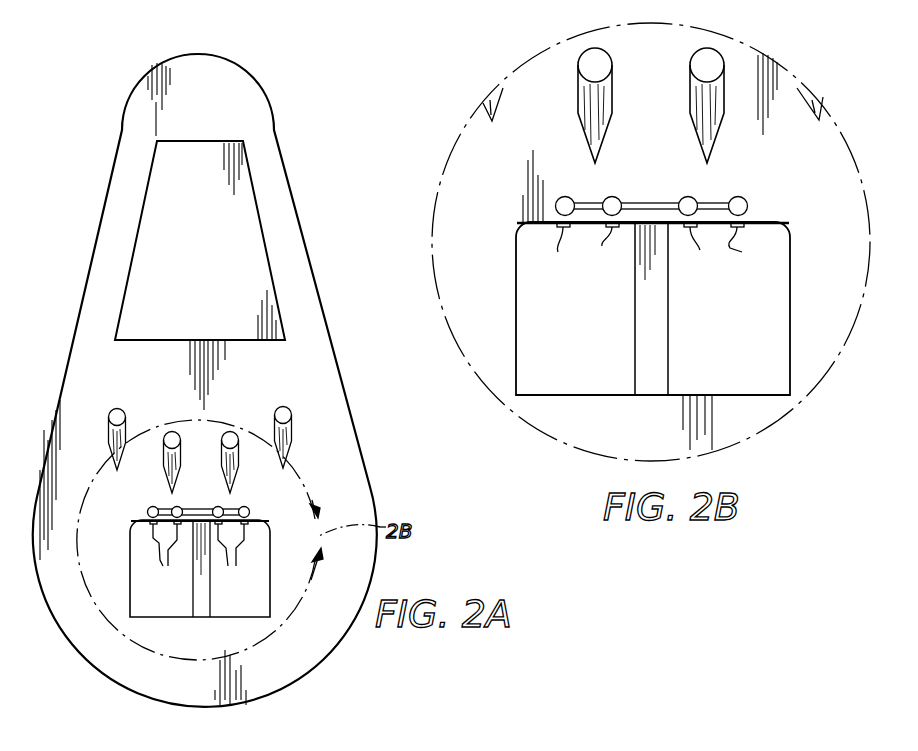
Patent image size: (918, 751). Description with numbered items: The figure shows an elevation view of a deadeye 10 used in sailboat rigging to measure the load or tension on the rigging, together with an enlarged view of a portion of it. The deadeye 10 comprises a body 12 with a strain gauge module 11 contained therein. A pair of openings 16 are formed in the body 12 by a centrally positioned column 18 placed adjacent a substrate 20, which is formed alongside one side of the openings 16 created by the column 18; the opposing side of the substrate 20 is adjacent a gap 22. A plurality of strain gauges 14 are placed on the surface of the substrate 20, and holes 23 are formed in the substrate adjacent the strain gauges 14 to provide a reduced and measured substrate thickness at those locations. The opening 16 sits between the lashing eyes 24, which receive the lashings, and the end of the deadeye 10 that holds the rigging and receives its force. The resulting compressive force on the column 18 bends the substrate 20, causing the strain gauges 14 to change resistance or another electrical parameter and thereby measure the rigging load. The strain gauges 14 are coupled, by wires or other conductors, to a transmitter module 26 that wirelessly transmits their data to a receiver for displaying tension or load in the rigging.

In FIG. 2A, the deadeye 10 is at (335, 285).
In FIG. 2A, the strain gauge module 11 is at (278, 517).
In FIG. 2B, the strain gauge module 11 is at (808, 405).
In FIG. 2A, the body 12 is at (108, 243).
In FIG. 2A, the strain gauges 14 is at (201, 557).
In FIG. 2B, the strain gauges 14 is at (602, 246).
In FIG. 2A, the openings 16 is at (272, 593).
In FIG. 2B, the openings 16 is at (516, 348).
In FIG. 2A, the centrally positioned column 18 is at (200, 596).
In FIG. 2B, the centrally positioned column 18 is at (655, 328).
In FIG. 2B, the substrate 20 is at (745, 252).
In FIG. 2A, the gap 22 is at (201, 508).
In FIG. 2B, the gap 22 is at (652, 203).
In FIG. 2B, the holes 23 is at (612, 200).
In FIG. 2A, the lashing eyelets or eyes 24 is at (287, 420).
In FIG. 2B, the lashing eyelets or eyes 24 is at (717, 63).
In FIG. 2A, the transmitter module 26 is at (247, 243).